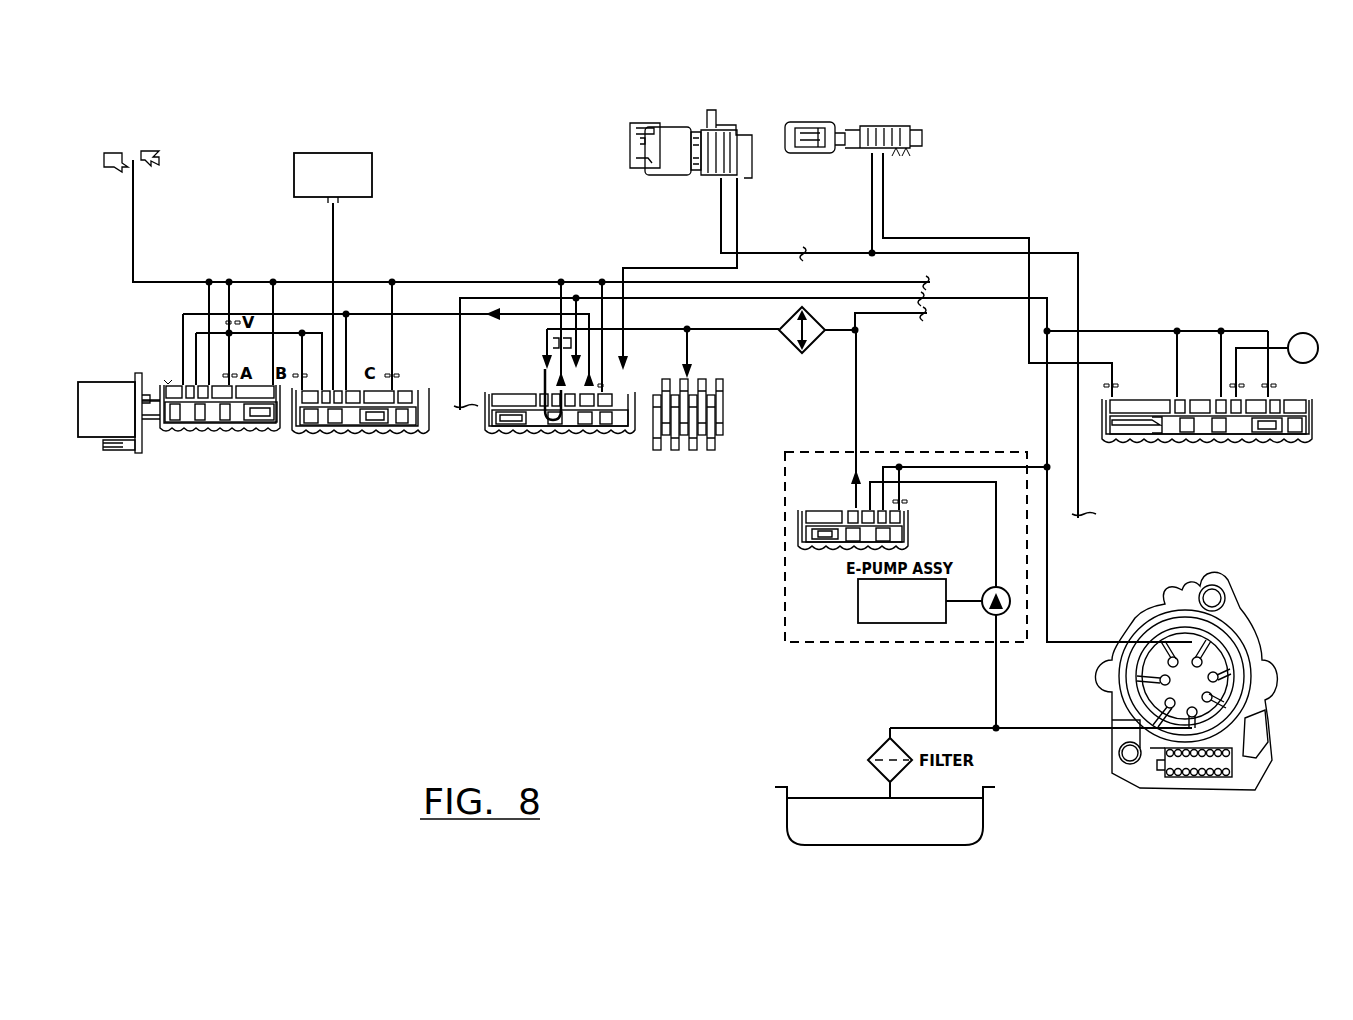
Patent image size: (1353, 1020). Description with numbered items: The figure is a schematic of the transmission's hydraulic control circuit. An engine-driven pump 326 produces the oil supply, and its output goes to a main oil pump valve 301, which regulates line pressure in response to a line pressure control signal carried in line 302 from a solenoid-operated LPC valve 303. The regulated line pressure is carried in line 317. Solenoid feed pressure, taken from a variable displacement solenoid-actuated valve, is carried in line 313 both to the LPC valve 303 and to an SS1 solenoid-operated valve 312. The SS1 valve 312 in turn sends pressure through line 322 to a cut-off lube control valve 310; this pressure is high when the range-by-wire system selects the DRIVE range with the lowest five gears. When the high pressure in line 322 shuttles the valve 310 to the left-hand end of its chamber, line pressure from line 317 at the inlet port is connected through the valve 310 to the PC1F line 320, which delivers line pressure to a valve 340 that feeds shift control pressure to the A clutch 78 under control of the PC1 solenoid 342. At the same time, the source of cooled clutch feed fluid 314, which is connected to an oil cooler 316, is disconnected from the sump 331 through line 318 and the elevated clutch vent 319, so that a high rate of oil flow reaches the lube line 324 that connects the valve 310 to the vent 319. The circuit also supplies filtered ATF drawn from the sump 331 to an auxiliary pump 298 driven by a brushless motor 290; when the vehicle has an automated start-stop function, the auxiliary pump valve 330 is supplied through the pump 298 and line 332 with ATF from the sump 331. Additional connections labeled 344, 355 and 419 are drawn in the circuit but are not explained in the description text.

The A clutch 78 is at (372, 176).
The brushless motor 290 is at (902, 623).
The auxiliary pump 298 is at (1006, 614).
The main oil pump valve 301 is at (1165, 460).
The line pressure control line 302 is at (963, 238).
The solenoid-operated LPC valve 303 is at (827, 153).
The cut-off lube control valve 310 is at (546, 448).
The SS1 solenoid-operated valve 312 is at (623, 168).
The solenoid feed pressure line 313 is at (778, 253).
The cooled clutch feed fluid source 314 is at (752, 331).
The oil cooler 316 is at (808, 348).
The line pressure line 317 is at (700, 298).
The sump line 318 is at (445, 282).
The elevated clutch vent 319 is at (150, 168).
The PC1F line 320 is at (470, 316).
The pressure line from SS1 valve 322 is at (648, 268).
The lube line 324 is at (690, 338).
The engine-driven pump 326 is at (1215, 560).
The auxiliary pump valve 330 is at (835, 556).
The sump 331 is at (1000, 810).
The auxiliary pump line 332 is at (996, 505).
The A clutch control valve 340 is at (358, 448).
The PC1 solenoid 342 is at (110, 382).
The hydraulic line 344 is at (333, 256).
The hydraulic line 355 is at (898, 313).
The port marker 419 is at (543, 338).